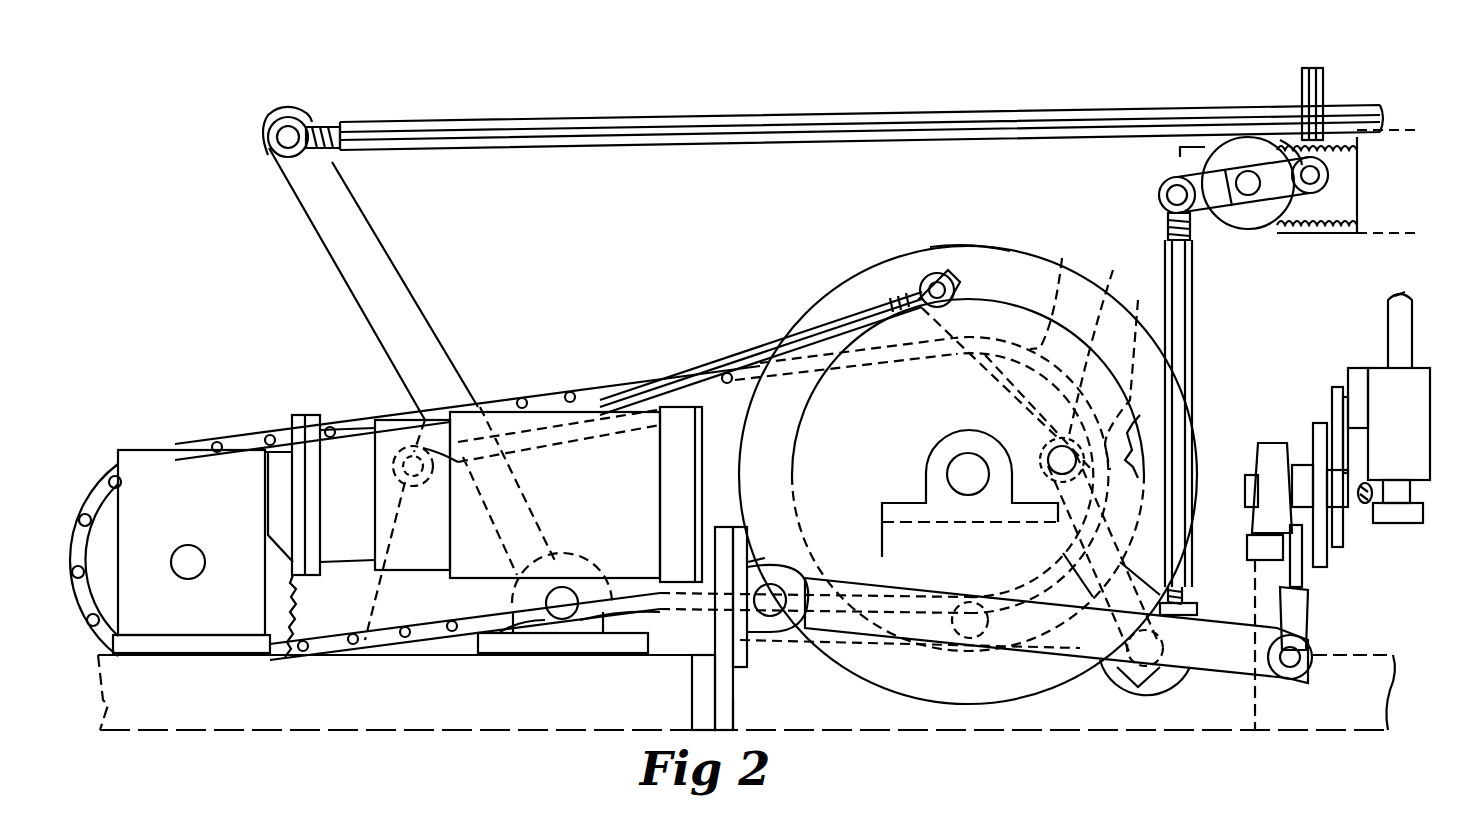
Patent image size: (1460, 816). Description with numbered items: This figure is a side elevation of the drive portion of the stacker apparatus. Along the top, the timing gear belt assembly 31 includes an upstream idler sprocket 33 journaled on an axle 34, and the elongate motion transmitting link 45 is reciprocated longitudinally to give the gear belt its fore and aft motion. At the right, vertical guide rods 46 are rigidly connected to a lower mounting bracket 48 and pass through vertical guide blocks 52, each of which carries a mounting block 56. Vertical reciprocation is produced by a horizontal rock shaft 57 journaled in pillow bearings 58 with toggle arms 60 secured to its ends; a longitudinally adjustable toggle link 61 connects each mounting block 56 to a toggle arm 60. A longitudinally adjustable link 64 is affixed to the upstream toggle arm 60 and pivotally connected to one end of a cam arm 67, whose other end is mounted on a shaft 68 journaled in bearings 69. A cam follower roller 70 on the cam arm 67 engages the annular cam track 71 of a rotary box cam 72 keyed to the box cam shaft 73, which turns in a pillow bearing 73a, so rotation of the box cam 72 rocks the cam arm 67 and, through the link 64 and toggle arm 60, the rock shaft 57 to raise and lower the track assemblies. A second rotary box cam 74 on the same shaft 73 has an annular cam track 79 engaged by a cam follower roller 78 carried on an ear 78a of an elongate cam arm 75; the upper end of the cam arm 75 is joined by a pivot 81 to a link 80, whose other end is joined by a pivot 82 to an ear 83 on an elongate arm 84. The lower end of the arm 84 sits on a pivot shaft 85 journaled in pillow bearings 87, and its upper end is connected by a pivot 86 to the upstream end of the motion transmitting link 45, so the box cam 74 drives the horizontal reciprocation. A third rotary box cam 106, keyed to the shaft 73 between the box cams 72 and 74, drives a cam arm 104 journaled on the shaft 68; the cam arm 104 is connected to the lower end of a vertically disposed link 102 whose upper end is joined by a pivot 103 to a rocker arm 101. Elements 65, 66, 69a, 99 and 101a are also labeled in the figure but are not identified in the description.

The timing gear belt assembly 31 is at (1317, 232).
The upstream idler sprocket 33 is at (1213, 137).
The axle 34 is at (1253, 196).
The motion transmitting link 45 is at (810, 138).
The vertical guide rods 46 is at (1387, 300).
The lower mounting bracket 48 is at (1408, 525).
The vertical guide block 52 is at (1377, 367).
The mounting block 56 is at (1358, 368).
The rock shaft 57 is at (1242, 480).
The pillow bearings 58 is at (1273, 447).
The toggle arms 60 is at (1313, 427).
The toggle link 61 is at (1337, 510).
The adjustable link 64 is at (1302, 610).
The shaft 65 is at (1275, 528).
The pivot pin 66 is at (1310, 650).
The cam arm 67 is at (1238, 668).
The shaft 68 is at (772, 612).
The bearings 69 is at (800, 627).
The base of bracket 69a is at (747, 713).
The cam follower roller 70 is at (930, 643).
The annular cam track 71 is at (1062, 290).
The rotary box cam 72 is at (1010, 292).
The box cam shaft 73 is at (963, 452).
The pillow bearing 73a is at (926, 467).
The rotary box cam 74 is at (1007, 247).
The cam arm 75 is at (960, 250).
The cam follower roller 78 is at (1135, 340).
The ear 78a is at (1098, 300).
The annular cam track 79 is at (1087, 488).
The link 80 is at (728, 352).
The pivot 81 is at (937, 273).
The pivot 82 is at (411, 456).
The ear 83 is at (405, 572).
The arm 84 is at (325, 233).
The pivot shaft 85 is at (562, 620).
The pivot 86 is at (272, 150).
The pillow bearings 87 is at (635, 618).
The pin 99 is at (1300, 80).
The rocker arm 101 is at (1190, 167).
The eye end 101a is at (1323, 170).
The link 102 is at (1193, 310).
The pivot 103 is at (1167, 195).
The cam arm 104 is at (1193, 603).
The rotary box cam 106 is at (1143, 437).